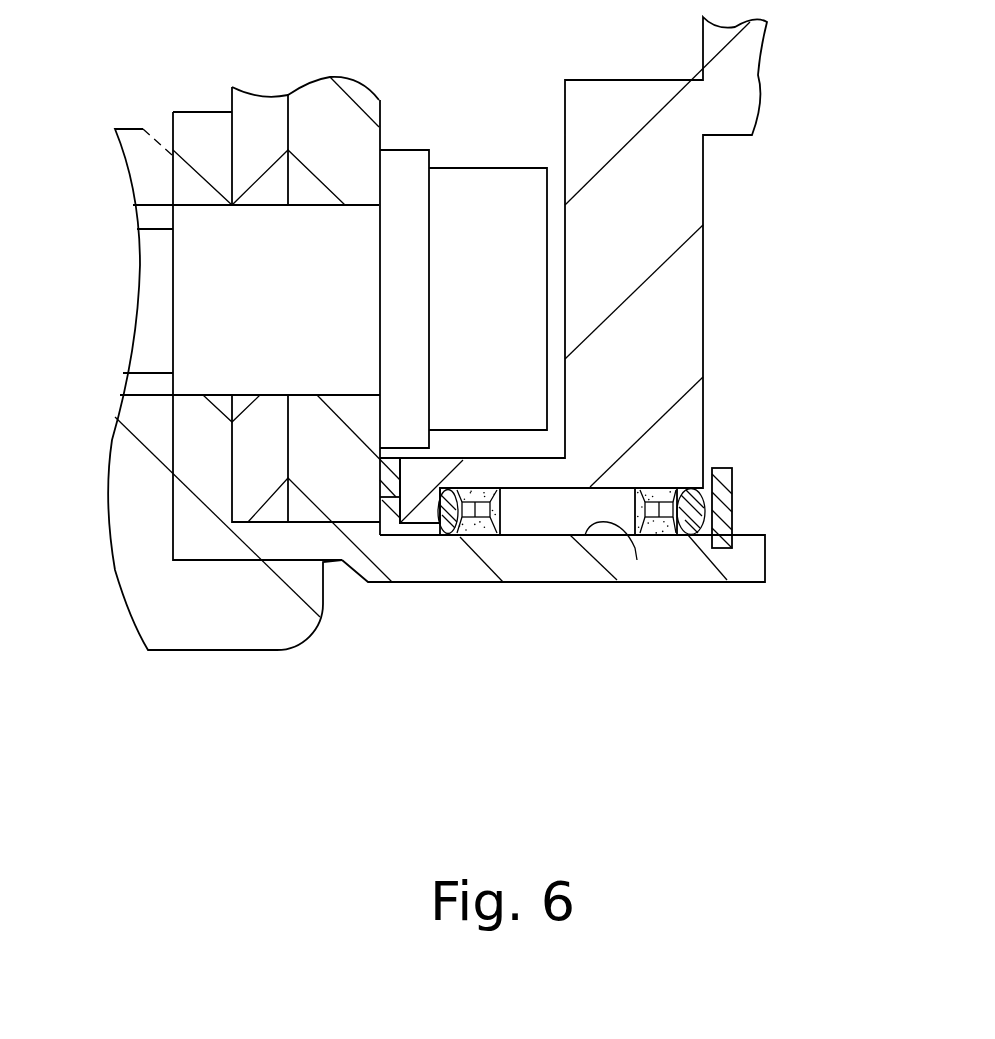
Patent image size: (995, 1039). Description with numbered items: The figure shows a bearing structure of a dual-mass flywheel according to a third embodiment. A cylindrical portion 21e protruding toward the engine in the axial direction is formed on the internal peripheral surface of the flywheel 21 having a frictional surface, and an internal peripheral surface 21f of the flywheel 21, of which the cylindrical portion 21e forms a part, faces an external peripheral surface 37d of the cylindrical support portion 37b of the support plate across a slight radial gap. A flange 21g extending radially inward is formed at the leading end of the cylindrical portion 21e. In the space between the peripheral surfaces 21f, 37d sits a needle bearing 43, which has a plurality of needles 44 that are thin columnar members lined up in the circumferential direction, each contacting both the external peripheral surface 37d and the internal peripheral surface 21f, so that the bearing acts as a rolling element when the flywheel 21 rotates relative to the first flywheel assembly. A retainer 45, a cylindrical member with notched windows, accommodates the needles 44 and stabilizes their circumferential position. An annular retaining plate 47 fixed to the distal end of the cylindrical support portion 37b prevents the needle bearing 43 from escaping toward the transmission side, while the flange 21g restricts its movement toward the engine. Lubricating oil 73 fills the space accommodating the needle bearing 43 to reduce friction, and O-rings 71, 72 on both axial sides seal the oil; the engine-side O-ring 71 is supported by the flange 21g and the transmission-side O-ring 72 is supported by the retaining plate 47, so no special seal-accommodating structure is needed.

The flywheel having a frictional surface 21 is at (670, 193).
The cylindrical portion 21e is at (503, 470).
The internal peripheral surface 21f is at (548, 497).
The flange 21g is at (420, 498).
The cylindrical support portion 37b is at (573, 586).
The external peripheral surface 37d is at (637, 560).
The needle bearing 43 is at (657, 499).
The needles 44 is at (590, 500).
The retainer 45 is at (670, 495).
The retaining plate 47 is at (730, 510).
The O-ring 71 is at (450, 535).
The O-ring 72 is at (693, 537).
The lubricating oil 73 is at (475, 535).